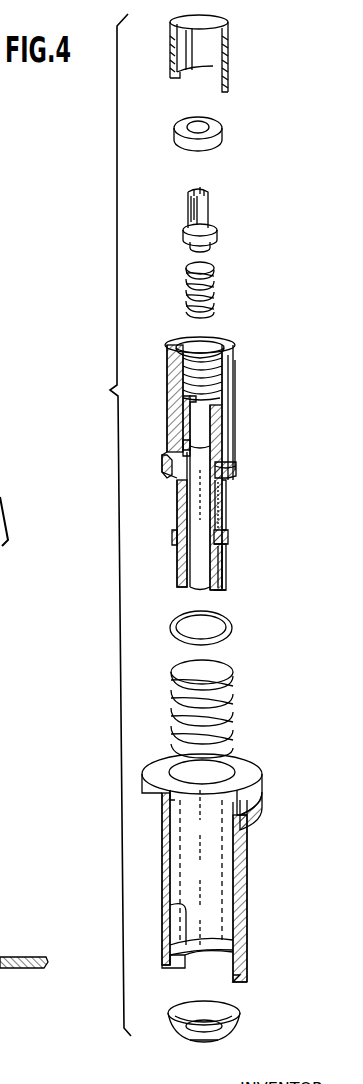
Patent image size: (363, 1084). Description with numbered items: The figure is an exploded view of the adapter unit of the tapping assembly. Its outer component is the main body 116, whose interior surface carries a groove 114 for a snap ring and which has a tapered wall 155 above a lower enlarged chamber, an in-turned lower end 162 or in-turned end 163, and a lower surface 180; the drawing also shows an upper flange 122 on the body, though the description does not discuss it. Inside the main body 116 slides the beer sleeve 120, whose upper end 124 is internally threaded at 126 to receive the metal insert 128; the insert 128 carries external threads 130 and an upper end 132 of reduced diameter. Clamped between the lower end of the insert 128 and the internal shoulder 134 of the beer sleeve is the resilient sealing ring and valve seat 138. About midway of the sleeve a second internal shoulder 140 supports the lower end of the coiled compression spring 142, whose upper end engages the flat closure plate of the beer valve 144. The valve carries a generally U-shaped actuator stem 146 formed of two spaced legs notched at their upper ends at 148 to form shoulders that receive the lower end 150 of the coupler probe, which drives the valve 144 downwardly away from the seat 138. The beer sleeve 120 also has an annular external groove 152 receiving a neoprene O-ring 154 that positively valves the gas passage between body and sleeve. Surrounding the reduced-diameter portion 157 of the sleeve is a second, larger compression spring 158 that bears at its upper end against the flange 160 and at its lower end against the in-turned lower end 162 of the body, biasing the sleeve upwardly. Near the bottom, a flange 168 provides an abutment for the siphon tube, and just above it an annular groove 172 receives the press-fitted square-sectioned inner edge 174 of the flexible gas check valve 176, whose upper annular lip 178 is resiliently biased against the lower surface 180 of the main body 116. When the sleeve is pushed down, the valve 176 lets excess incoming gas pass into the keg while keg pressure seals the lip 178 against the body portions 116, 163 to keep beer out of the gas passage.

The groove 114 is at (172, 792).
The main body 116 is at (246, 766).
The beer sleeve 120 is at (232, 430).
The flange 122 is at (262, 800).
The upper end of beer sleeve 124 is at (230, 348).
The internal threads 126 is at (179, 377).
The metal insert 128 is at (190, 57).
The external threads 130 is at (228, 74).
The upper end of insert 132 is at (222, 25).
The internal shoulder 134 is at (185, 407).
The sealing ring and valve seat 138 is at (222, 140).
The second internal shoulder 140 is at (184, 445).
The coiled compression spring 142 is at (214, 238).
The beer valve 144 is at (216, 226).
The actuator stem 146 is at (189, 206).
The notches 148 is at (208, 195).
The lower end of coupler probe 150 is at (236, 393).
The annular external groove 152 is at (234, 474).
The O-ring 154 is at (234, 628).
The tapered wall 155 is at (178, 914).
The reduced-diameter portion 157 is at (224, 502).
The second coiled compression spring 158 is at (237, 704).
The flange 160 is at (166, 472).
The in-turned lower end 162 is at (220, 576).
The in-turned end 163 is at (170, 968).
The flange 168 is at (224, 546).
The annular groove 172 is at (228, 538).
The inner edge 174 is at (214, 1040).
The gas check valve 176 is at (232, 1016).
The annular lip 178 is at (220, 1003).
The lower surface 180 is at (250, 978).